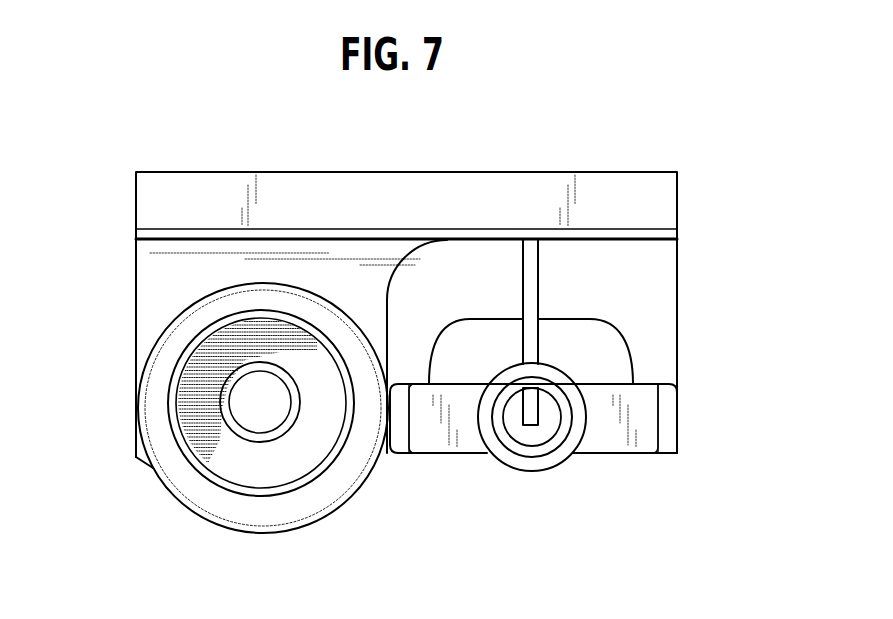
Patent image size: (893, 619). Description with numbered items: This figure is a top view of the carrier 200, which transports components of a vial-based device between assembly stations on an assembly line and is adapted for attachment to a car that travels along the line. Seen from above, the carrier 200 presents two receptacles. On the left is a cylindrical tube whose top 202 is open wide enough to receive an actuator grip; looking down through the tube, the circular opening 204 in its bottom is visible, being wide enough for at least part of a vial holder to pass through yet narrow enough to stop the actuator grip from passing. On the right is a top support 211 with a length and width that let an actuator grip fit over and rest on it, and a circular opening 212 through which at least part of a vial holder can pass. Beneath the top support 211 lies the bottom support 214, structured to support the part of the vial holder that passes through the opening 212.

The carrier 200 is at (122, 100).
The top 202 is at (193, 470).
The circular opening 204 is at (258, 398).
The top support 211 is at (633, 420).
The circular opening 212 is at (535, 432).
The bottom support 214 is at (538, 408).